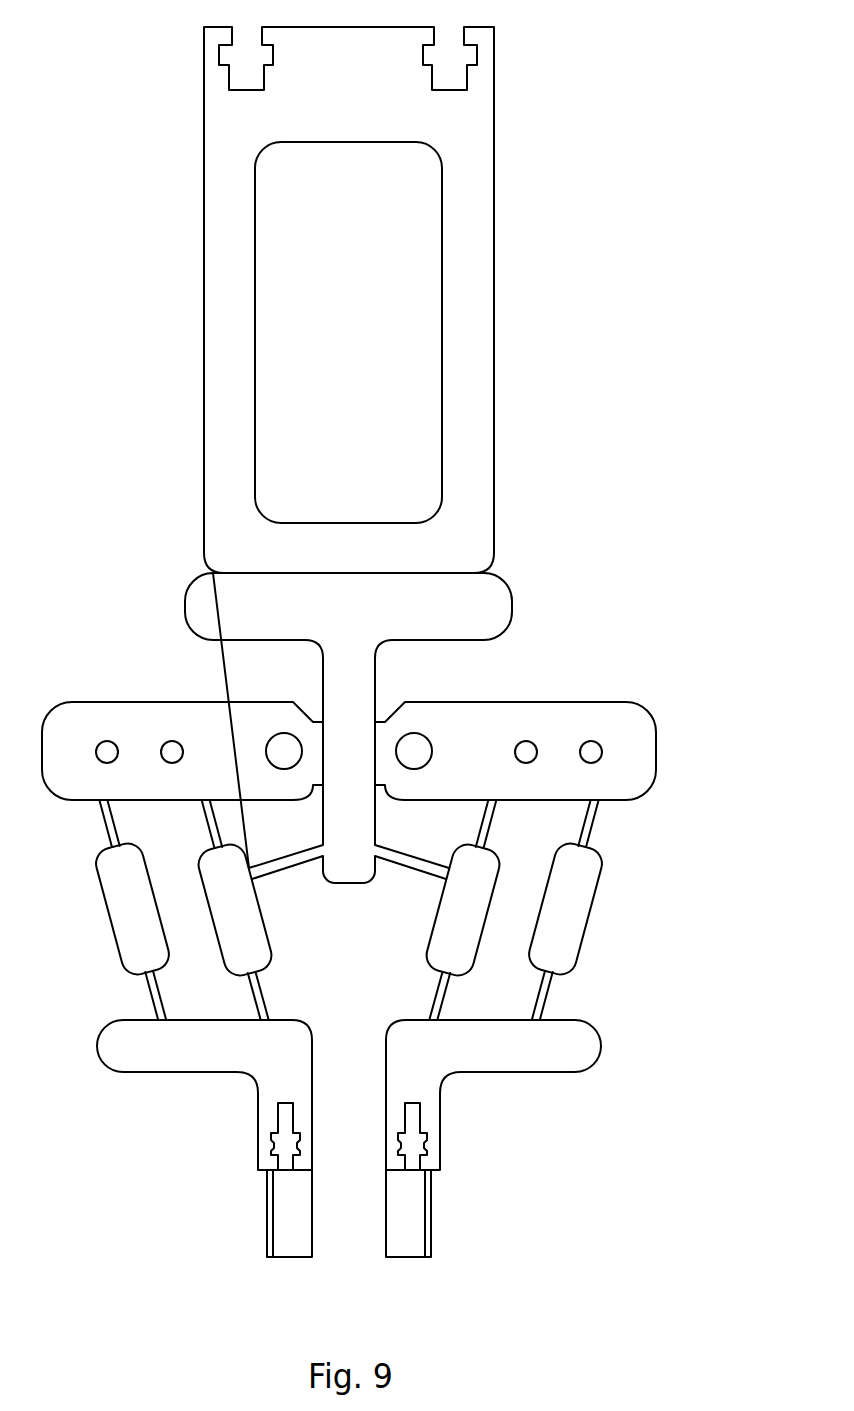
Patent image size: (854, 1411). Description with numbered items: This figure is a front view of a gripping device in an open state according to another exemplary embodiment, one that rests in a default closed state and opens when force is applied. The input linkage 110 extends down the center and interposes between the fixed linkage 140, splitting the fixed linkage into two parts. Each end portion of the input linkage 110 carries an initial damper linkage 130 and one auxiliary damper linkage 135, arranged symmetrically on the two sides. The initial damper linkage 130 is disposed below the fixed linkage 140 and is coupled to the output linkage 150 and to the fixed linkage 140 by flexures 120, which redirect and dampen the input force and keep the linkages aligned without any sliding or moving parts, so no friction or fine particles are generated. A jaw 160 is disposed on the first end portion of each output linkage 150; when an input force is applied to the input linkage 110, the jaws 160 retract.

The input linkage 110 is at (512, 617).
The flexures 120 is at (593, 828).
The initial damper linkage 130 is at (263, 920).
The auxiliary damper linkage 135 is at (590, 927).
The fixed linkage 140 is at (657, 758).
The output linkage 150 is at (598, 1057).
The jaw 160 is at (432, 1230).